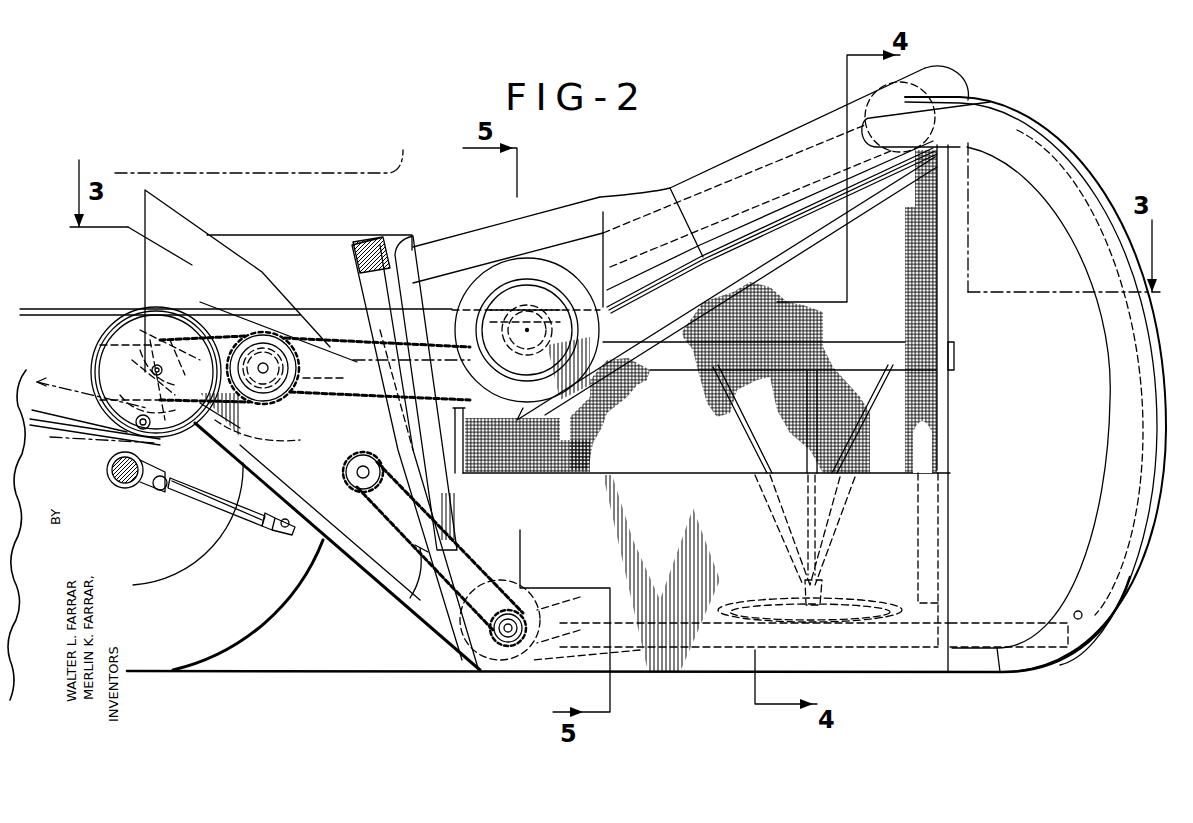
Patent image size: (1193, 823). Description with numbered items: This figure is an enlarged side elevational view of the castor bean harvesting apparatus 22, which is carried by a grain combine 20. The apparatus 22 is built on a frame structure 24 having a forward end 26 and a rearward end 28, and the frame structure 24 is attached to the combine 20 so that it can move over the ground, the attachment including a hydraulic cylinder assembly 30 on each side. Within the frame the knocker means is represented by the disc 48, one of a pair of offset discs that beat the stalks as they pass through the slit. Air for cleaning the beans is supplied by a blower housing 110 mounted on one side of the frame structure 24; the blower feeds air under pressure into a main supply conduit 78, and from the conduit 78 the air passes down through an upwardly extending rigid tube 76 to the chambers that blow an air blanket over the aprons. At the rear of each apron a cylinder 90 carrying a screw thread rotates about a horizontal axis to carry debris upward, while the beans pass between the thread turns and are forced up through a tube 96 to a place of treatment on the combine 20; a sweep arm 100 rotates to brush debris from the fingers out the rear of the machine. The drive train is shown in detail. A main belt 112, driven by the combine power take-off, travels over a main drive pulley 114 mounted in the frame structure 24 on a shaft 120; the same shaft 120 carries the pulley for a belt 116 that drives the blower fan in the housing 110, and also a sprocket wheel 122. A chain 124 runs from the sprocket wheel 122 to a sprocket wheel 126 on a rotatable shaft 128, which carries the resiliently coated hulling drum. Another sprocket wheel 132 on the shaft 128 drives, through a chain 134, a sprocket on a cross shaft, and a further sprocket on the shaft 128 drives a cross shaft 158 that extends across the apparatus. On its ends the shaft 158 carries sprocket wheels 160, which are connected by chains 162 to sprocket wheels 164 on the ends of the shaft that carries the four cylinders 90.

The combine 20 is at (308, 614).
The castor bean harvesting apparatus 22 is at (403, 632).
The frame structure 24 is at (349, 560).
The forward end 26 is at (1105, 628).
The rearward end 28 is at (145, 270).
The hydraulic cylinder assembly 30 is at (245, 520).
The disc 48 is at (860, 600).
The rigid tube 76 is at (1112, 347).
The main supply conduit 78 is at (943, 73).
The cylinder 90 is at (550, 584).
The tube 96 is at (398, 252).
The sweep arm 100 is at (420, 565).
The blower housing 110 is at (512, 268).
The main belt 112 is at (33, 302).
The main drive pulley 114 is at (165, 322).
The belt 116 is at (327, 303).
The shaft 120 is at (152, 370).
The sprocket wheel 122 is at (166, 360).
The chain 124 is at (255, 445).
The sprocket wheel 126 is at (242, 325).
The rotatable shaft 128 is at (266, 362).
The sprocket wheel 132 is at (335, 376).
The chain 134 is at (343, 345).
The cross shaft 158 is at (350, 490).
The sprocket wheel 160 is at (368, 517).
The chain 162 is at (470, 562).
The sprocket wheel 164 is at (490, 640).